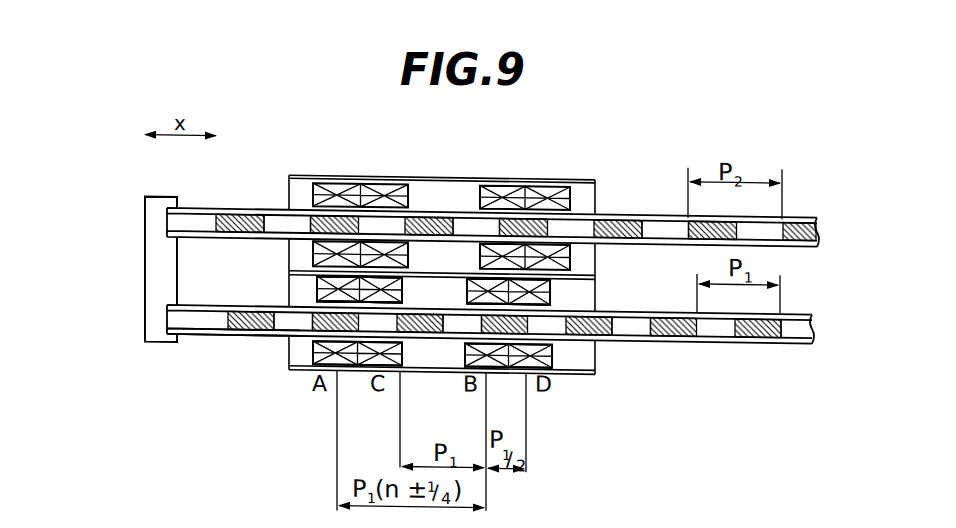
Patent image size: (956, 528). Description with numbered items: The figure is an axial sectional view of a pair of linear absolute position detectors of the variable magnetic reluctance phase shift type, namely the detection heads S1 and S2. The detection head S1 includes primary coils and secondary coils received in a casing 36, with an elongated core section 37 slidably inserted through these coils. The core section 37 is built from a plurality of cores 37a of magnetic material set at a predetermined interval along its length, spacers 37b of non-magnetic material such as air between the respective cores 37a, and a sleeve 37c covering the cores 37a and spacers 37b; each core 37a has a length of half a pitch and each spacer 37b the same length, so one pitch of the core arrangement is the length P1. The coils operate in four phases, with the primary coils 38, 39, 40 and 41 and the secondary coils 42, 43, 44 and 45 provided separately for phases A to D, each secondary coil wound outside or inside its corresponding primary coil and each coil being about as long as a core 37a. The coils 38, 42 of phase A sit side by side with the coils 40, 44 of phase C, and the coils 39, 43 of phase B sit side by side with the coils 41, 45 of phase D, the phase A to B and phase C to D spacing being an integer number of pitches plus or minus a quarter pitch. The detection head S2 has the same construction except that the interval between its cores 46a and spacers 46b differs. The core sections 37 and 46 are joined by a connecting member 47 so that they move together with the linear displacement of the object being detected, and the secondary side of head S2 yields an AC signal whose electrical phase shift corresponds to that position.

The casing 36 is at (592, 370).
The core section 37 is at (805, 302).
The core 37a is at (242, 330).
The spacer 37b is at (283, 336).
The sleeve 37c is at (192, 336).
The primary coil 38 is at (315, 297).
The primary coil 39 is at (383, 354).
The primary coil 40 is at (402, 293).
The primary coil 41 is at (550, 290).
The secondary coil 42 is at (316, 286).
The secondary coil 43 is at (452, 340).
The secondary coil 44 is at (402, 279).
The secondary coil 45 is at (550, 280).
The core section 46 is at (800, 206).
The core 46a is at (230, 215).
The spacer 46b is at (283, 220).
The connecting member 47 is at (146, 250).
The linear position detection head S1 is at (567, 402).
The linear position detection head S2 is at (616, 133).